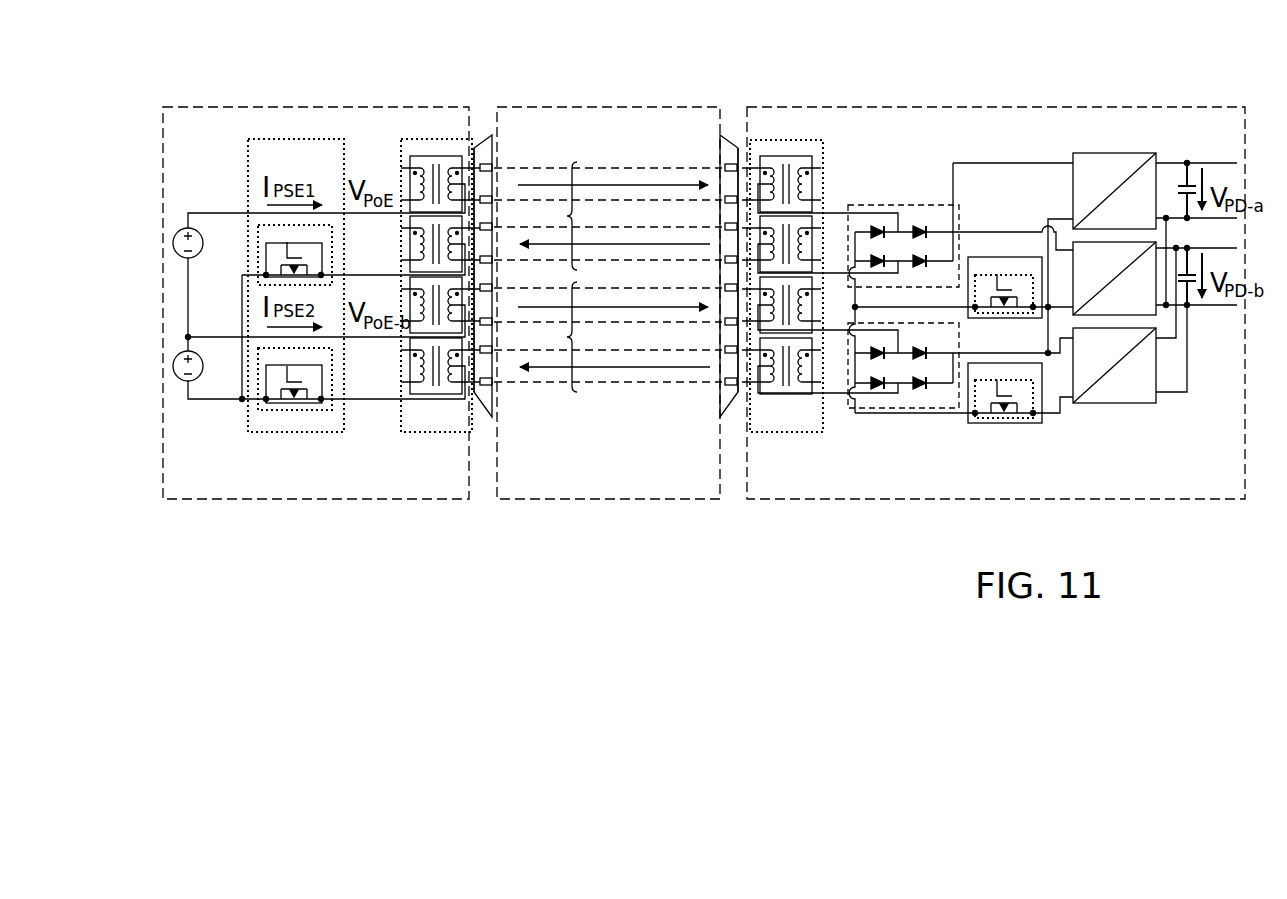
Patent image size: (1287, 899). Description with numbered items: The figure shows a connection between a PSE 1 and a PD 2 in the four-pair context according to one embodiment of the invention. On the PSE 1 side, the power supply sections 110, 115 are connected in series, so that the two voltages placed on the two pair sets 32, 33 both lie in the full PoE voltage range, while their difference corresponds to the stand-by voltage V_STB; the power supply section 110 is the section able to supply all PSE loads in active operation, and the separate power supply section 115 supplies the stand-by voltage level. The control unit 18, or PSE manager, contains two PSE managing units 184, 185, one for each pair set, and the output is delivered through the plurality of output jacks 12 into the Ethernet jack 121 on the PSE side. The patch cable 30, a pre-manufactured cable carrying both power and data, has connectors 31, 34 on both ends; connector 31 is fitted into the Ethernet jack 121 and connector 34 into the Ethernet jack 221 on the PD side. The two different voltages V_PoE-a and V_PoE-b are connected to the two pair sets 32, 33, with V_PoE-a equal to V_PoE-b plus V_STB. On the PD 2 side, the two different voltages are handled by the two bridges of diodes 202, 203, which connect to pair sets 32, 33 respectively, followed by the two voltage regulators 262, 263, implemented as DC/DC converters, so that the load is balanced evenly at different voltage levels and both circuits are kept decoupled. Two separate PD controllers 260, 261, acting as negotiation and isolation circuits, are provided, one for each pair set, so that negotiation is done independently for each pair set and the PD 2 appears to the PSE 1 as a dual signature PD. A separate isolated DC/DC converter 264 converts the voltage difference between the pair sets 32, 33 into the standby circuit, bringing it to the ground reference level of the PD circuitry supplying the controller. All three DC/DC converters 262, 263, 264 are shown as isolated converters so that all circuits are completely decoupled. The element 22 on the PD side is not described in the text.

The PSE 1 is at (140, 98).
The PD 2 is at (1208, 102).
The plurality of output jacks 12 is at (405, 135).
The control unit 18 is at (300, 135).
The PD-side transformers 22 is at (793, 137).
The patch cable 30 is at (595, 100).
The connector 31 is at (495, 150).
The pair set 32 is at (608, 216).
The pair set 33 is at (608, 337).
The connector 34 is at (718, 150).
The power supply section 110 is at (170, 366).
The power supply section for stand-by operation 115 is at (170, 243).
The Ethernet jack 121 is at (481, 133).
The PSE managing unit 184 is at (322, 257).
The PSE managing unit 185 is at (322, 380).
The bridge of diodes 202 is at (888, 200).
The bridge of diodes 203 is at (897, 415).
The Ethernet jack 221 is at (737, 133).
The PD controller 260 is at (1012, 255).
The PD controller 261 is at (997, 425).
The voltage regulator 262 is at (1162, 314).
The voltage regulator 263 is at (1107, 408).
The isolated DC/DC converter 264 is at (1112, 150).